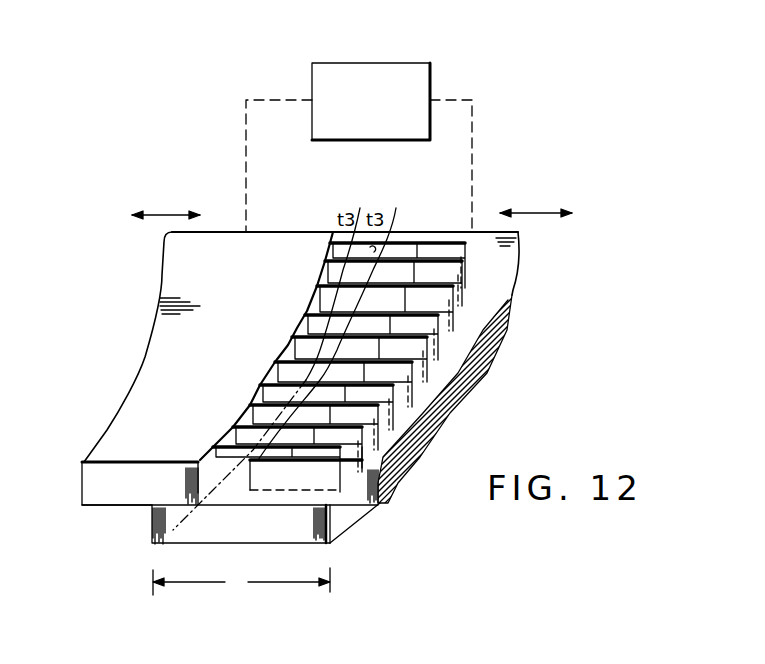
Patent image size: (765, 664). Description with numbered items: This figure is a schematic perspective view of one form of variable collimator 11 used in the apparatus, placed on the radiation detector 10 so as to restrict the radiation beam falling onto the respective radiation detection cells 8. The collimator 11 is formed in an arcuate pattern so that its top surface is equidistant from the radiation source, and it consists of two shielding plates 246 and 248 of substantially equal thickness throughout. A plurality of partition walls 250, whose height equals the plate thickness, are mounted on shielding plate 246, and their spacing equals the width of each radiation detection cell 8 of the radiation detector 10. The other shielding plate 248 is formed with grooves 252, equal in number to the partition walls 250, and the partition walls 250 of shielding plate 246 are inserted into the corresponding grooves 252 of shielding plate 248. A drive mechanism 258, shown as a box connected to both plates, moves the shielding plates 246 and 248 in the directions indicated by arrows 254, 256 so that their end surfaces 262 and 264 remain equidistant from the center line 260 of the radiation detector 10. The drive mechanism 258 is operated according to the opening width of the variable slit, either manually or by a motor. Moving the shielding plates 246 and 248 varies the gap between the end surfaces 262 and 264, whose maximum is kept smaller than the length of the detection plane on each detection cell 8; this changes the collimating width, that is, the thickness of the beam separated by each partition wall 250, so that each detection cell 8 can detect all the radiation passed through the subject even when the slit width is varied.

The radiation detection cell 8 is at (330, 540).
The radiation detector 10 is at (362, 517).
The variable collimator 11 is at (110, 523).
The shielding plate 246 is at (168, 358).
The shielding plate 248 is at (453, 367).
The partition wall 250 is at (250, 413).
The groove 252 is at (386, 367).
The arrow 254 is at (170, 212).
The arrow 256 is at (540, 212).
The drive mechanism 258 is at (401, 72).
The center line 260 is at (177, 513).
The end surface 262 is at (318, 302).
The end surface 264 is at (388, 242).